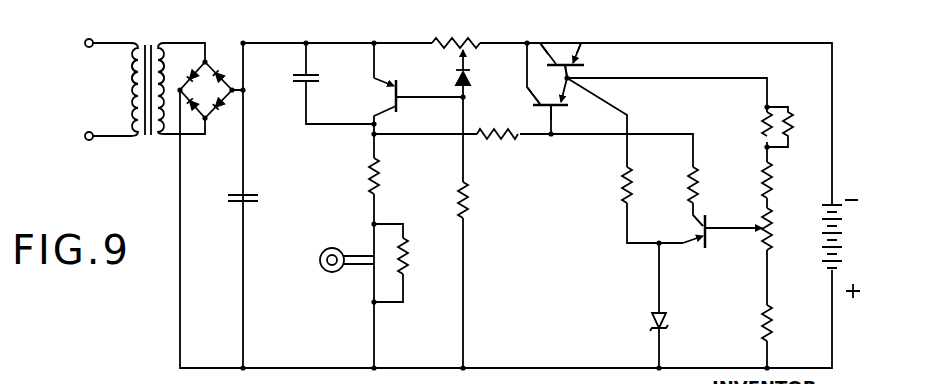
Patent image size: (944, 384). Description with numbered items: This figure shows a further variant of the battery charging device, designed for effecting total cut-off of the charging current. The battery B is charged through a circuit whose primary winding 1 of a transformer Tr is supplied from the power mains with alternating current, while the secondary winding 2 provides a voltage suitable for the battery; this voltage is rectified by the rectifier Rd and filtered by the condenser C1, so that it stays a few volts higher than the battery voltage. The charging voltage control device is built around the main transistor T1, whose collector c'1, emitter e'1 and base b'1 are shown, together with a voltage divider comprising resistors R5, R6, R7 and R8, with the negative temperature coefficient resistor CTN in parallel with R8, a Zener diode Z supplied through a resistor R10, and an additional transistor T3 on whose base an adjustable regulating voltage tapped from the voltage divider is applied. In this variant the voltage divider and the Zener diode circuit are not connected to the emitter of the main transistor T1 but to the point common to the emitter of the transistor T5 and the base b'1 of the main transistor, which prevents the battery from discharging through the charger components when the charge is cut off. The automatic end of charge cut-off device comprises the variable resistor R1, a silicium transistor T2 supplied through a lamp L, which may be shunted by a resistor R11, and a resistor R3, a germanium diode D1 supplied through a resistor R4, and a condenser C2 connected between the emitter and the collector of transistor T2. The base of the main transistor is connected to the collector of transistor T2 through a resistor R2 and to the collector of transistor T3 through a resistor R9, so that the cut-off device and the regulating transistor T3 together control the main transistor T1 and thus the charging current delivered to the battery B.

The transformer Tr is at (146, 43).
The primary winding 1 is at (130, 74).
The secondary winding 2 is at (162, 45).
The rectifier Rd is at (221, 68).
The condenser C1 is at (240, 192).
The condenser C2 is at (303, 84).
The silicium transistor T2 is at (377, 93).
The variable resistor R1 is at (463, 40).
The germanium diode D1 is at (470, 82).
The resistor R3 is at (358, 174).
The lamp L is at (333, 247).
The resistor R11 is at (405, 270).
The resistor R4 is at (469, 212).
The resistor R2 is at (505, 139).
The main transistor T1 is at (563, 50).
The collector of main transistor c'1 is at (531, 32).
The emitter of main transistor e'1 is at (580, 32).
The base of main transistor b'1 is at (591, 62).
The transistor T5 is at (562, 111).
The resistor R10 is at (628, 180).
The resistor R9 is at (691, 181).
The additional transistor T3 is at (700, 248).
The Zener diode Z is at (650, 322).
The resistor R8 is at (763, 121).
The negative temperature coefficient resistor CTN is at (790, 136).
The resistor R7 is at (765, 172).
The resistor R6 is at (767, 234).
The resistor R5 is at (767, 332).
The battery B is at (839, 244).